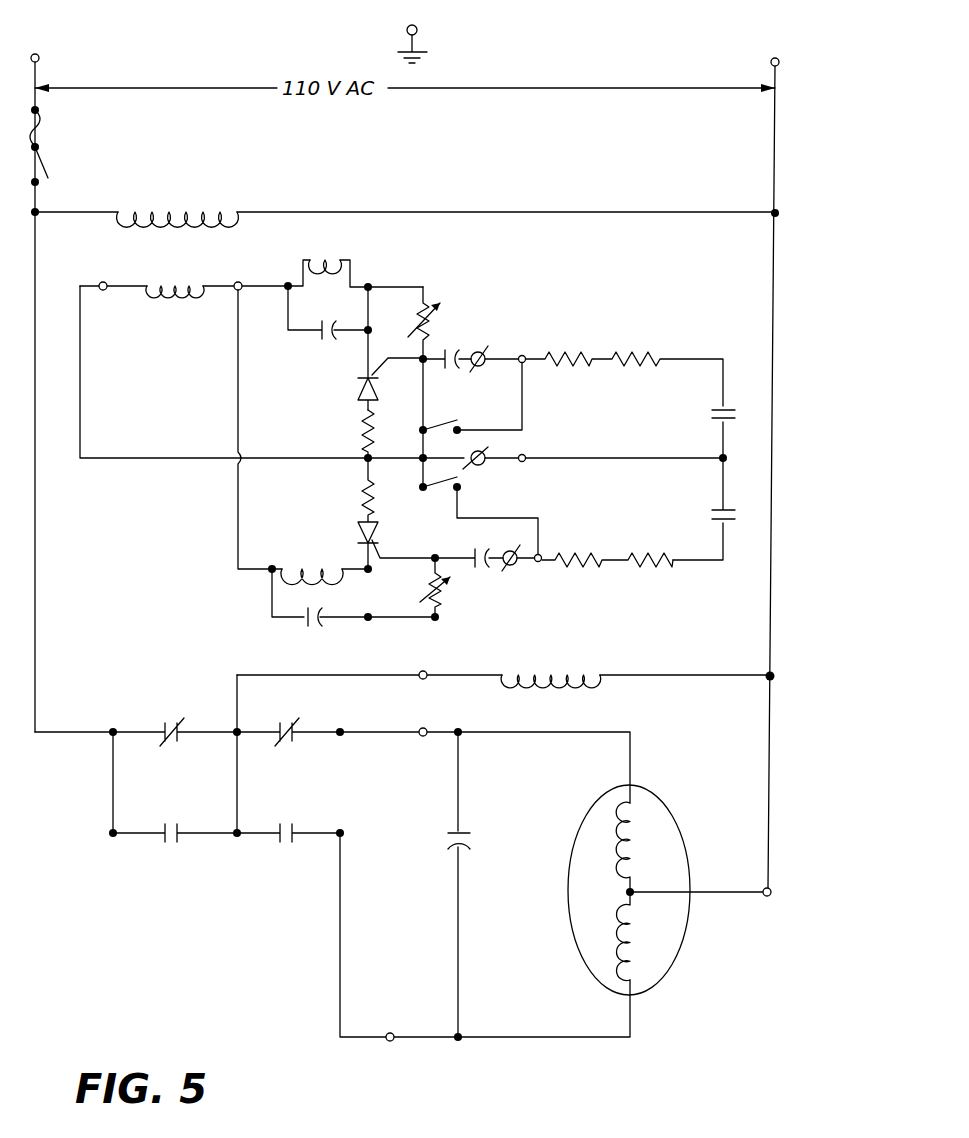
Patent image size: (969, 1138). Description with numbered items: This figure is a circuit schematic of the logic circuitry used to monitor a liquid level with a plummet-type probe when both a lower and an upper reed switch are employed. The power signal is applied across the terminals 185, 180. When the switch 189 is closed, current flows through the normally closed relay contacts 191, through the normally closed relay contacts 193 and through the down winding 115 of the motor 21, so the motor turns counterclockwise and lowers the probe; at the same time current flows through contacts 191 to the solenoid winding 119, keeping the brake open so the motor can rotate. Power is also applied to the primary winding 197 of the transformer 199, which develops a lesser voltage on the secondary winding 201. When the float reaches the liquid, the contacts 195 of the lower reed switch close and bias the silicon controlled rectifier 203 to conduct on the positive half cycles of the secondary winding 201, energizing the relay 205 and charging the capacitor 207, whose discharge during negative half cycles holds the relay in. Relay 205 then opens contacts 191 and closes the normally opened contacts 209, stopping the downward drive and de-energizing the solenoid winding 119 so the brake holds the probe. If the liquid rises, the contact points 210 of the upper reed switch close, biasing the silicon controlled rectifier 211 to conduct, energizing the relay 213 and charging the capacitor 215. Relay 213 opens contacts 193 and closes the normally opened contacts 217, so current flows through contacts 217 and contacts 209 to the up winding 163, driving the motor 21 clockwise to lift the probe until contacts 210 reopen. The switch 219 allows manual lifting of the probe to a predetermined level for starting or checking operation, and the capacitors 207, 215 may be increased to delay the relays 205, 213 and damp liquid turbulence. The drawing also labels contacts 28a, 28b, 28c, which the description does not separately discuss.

The terminal 185 is at (39, 55).
The terminal 180 is at (775, 57).
The switch 189 is at (65, 165).
The primary winding 197 is at (193, 210).
The transformer 199 is at (168, 240).
The secondary winding 201 is at (162, 298).
The relay 205 is at (332, 262).
The capacitor 207 is at (323, 340).
The silicon controlled rectifier 203 is at (372, 385).
The switch 219 is at (412, 455).
The silicon controlled rectifier 211 is at (377, 538).
The relay 213 is at (333, 562).
The capacitor 215 is at (320, 630).
The relay contact 28a is at (478, 348).
The relay contact 28b is at (490, 450).
The relay contact 28c is at (512, 568).
The contacts of lower reed switch 195 is at (725, 410).
The contact points of upper reed switch 210 is at (727, 520).
The solenoid winding 119 is at (542, 667).
The normally closed relay contacts 191 is at (188, 720).
The normally closed relay contacts 193 is at (293, 720).
The normally opened contacts 217 is at (180, 845).
The normally opened contacts 209 is at (283, 840).
The down winding 115 is at (618, 828).
The up winding 163 is at (618, 945).
The motor 21 is at (645, 890).